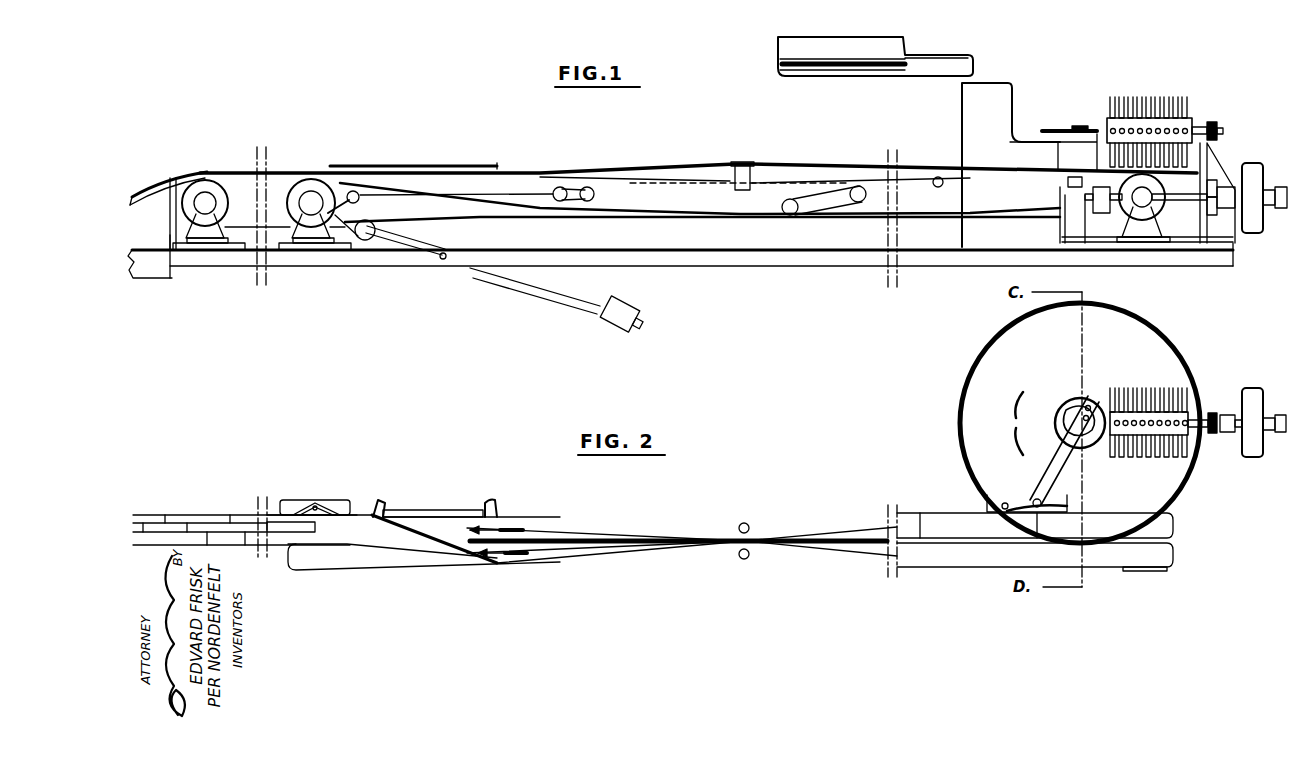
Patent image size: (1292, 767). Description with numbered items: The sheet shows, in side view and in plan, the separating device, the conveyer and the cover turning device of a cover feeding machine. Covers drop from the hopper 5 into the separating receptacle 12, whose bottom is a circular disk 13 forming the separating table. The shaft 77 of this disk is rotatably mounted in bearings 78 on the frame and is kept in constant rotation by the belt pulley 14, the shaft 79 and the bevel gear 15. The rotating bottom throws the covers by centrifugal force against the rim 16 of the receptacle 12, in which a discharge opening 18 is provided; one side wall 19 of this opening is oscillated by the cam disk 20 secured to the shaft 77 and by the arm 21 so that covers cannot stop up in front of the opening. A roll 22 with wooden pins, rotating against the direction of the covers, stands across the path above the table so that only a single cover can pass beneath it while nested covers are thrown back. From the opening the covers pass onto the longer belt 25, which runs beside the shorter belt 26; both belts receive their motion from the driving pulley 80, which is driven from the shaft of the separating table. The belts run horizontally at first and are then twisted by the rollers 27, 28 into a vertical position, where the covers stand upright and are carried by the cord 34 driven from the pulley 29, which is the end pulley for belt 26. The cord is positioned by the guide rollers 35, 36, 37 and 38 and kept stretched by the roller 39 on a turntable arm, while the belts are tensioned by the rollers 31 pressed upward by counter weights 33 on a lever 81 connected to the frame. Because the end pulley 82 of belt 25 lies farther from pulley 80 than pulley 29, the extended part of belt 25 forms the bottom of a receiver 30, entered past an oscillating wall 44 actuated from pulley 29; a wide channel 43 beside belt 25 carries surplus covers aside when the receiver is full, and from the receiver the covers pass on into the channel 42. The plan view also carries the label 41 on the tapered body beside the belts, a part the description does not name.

In FIG. 1, the hopper 5 is at (930, 62).
In FIG. 1, the separating receptacle 12 is at (1030, 135).
In FIG. 2, the separating receptacle 12 is at (1192, 483).
In FIG. 1, the circular disk 13 is at (1063, 165).
In FIG. 1, the belt pulley 14 is at (1250, 172).
In FIG. 2, the belt pulley 14 is at (1264, 422).
In FIG. 1, the bevel gear 15 is at (1087, 172).
In FIG. 1, the rim 16 is at (995, 108).
In FIG. 2, the discharge opening 18 is at (1072, 523).
In FIG. 2, the side wall 19 is at (1070, 450).
In FIG. 1, the cam disk 20 is at (1122, 102).
In FIG. 2, the cam disk 20 is at (1147, 450).
In FIG. 2, the arm 21 is at (1097, 437).
In FIG. 1, the roll 22 is at (1172, 127).
In FIG. 2, the roll 22 is at (1170, 523).
In FIG. 1, the belt 25 is at (343, 172).
In FIG. 2, the belt 25 is at (283, 528).
In FIG. 1, the belt 26 is at (903, 175).
In FIG. 2, the belt 26 is at (322, 557).
In FIG. 2, the roller 27 is at (737, 550).
In FIG. 1, the roller 28 is at (742, 192).
In FIG. 2, the roller 28 is at (744, 558).
In FIG. 1, the pulley 29 is at (300, 197).
In FIG. 2, the pulley 29 is at (335, 571).
In FIG. 1, the receiver 30 is at (407, 165).
In FIG. 1, the rollers 31 is at (370, 222).
In FIG. 1, the counter weights 33 is at (623, 313).
In FIG. 1, the cord 34 is at (390, 245).
In FIG. 2, the cord 34 is at (787, 550).
In FIG. 1, the guide roller 35 is at (333, 218).
In FIG. 1, the guide roller 36 is at (560, 200).
In FIG. 1, the guide roller 37 is at (587, 200).
In FIG. 1, the guide roller 38 is at (858, 200).
In FIG. 1, the roller 39 is at (790, 215).
In FIG. 1, the wedge guide 41 is at (430, 215).
In FIG. 2, the wedge guide 41 is at (378, 537).
In FIG. 1, the channel 42 is at (158, 178).
In FIG. 2, the wide channel 43 is at (422, 512).
In FIG. 2, the oscillating wall 44 is at (373, 513).
In FIG. 1, the shaft 77 is at (1120, 245).
In FIG. 2, the shaft 77 is at (1040, 507).
In FIG. 1, the bearings 78 is at (1077, 207).
In FIG. 1, the shaft 79 is at (1177, 198).
In FIG. 1, the driving pulley 80 is at (1217, 193).
In FIG. 2, the driving pulley 80 is at (1177, 480).
In FIG. 1, the lever 81 is at (472, 272).
In FIG. 1, the end pulley 82 is at (188, 208).